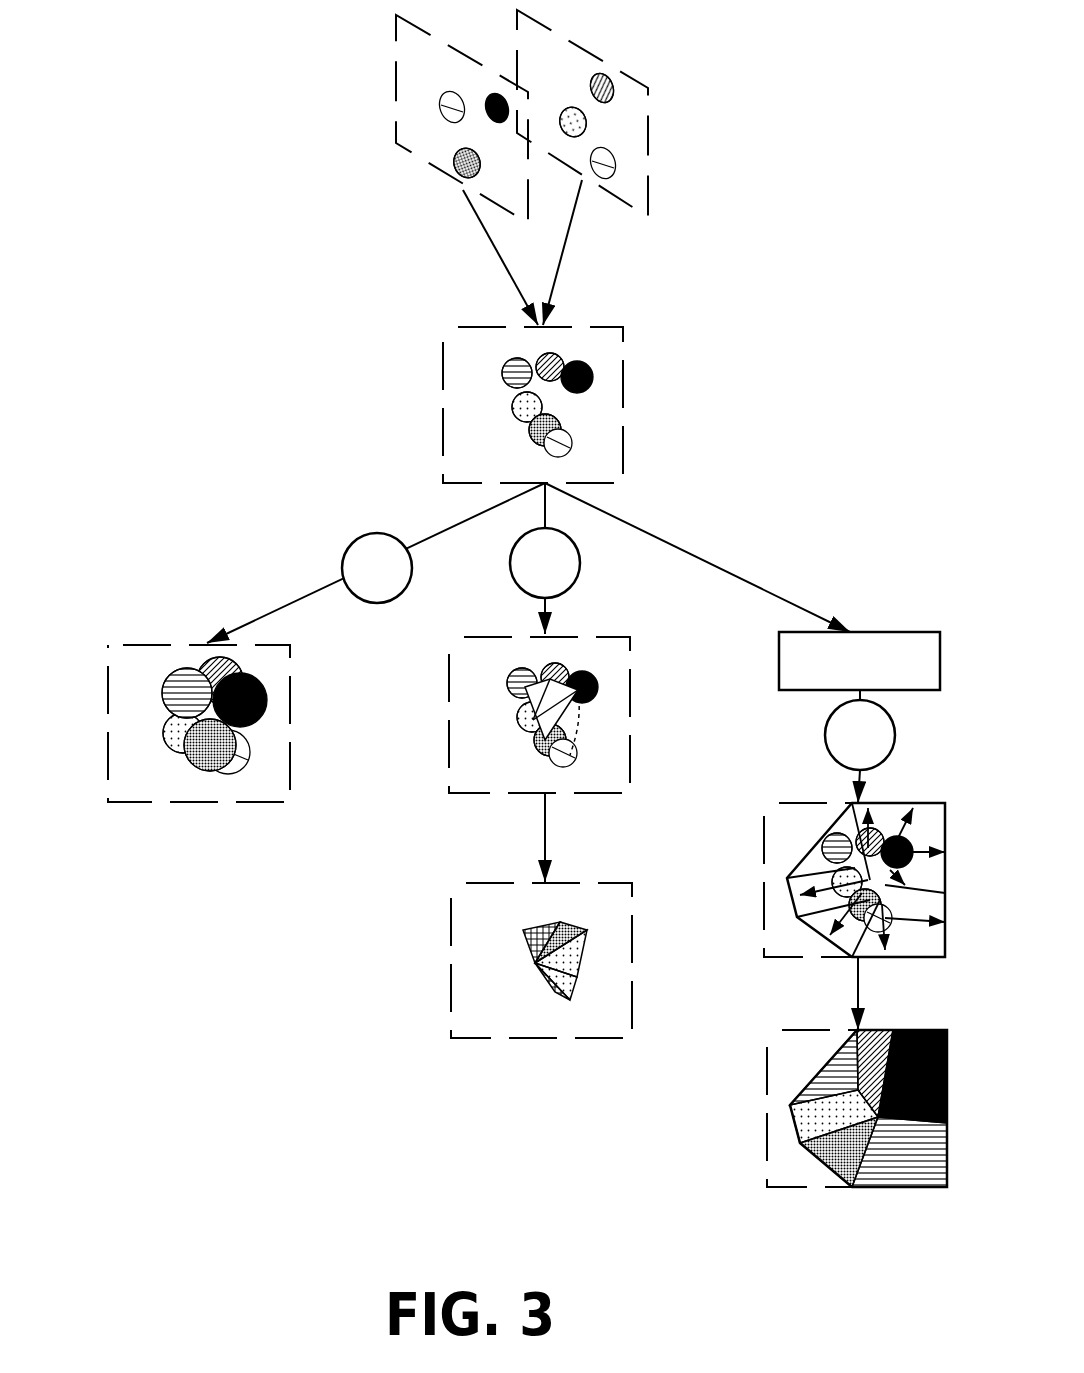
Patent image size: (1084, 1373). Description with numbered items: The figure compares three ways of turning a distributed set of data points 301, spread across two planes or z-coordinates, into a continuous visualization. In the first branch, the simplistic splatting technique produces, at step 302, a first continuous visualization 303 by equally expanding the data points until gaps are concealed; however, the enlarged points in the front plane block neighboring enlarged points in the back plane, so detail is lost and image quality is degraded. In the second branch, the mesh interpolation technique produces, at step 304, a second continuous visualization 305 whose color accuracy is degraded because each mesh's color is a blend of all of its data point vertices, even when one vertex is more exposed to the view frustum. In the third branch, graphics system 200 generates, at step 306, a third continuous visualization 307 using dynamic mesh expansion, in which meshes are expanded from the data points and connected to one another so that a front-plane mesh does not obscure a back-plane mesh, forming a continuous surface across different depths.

The graphics system 200 is at (742, 586).
The set of data points 301 is at (623, 395).
The simplistic splatting technique step 302 is at (376, 563).
The first continuous visualization 303 is at (122, 645).
The mesh interpolation technique step 304 is at (545, 558).
The second continuous visualization 305 is at (458, 883).
The dynamic mesh expansion step 306 is at (860, 746).
The third continuous visualization 307 is at (777, 1030).